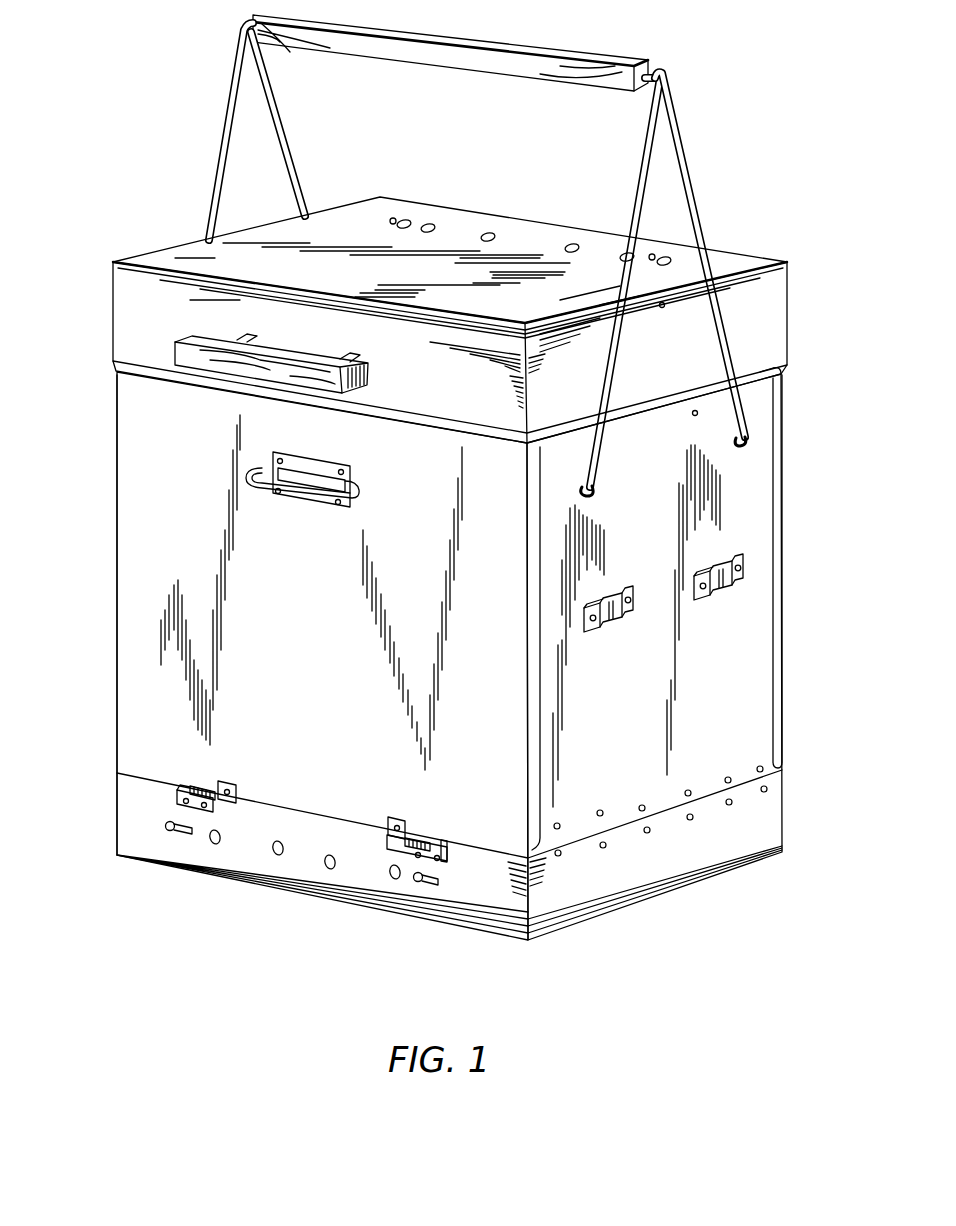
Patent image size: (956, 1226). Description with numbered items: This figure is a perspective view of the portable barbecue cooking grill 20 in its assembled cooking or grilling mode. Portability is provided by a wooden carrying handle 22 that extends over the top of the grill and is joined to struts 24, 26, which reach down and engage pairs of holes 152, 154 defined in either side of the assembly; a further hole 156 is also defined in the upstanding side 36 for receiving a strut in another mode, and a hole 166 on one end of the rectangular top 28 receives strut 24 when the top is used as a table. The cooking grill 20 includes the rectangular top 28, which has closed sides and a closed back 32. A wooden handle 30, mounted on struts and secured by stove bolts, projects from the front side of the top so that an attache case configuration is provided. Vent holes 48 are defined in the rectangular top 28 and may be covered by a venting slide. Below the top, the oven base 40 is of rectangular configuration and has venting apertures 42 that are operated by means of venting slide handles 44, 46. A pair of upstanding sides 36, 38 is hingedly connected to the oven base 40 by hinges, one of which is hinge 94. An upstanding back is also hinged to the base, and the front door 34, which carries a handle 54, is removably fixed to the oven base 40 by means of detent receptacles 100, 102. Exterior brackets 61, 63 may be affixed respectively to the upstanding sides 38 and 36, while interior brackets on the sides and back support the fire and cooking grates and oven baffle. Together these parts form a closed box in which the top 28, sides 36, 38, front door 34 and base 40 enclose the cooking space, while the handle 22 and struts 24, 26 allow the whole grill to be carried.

The portable barbecue cooking grill 20 is at (802, 282).
The wooden carrying handle 22 is at (613, 58).
The strut 24 is at (645, 153).
The strut 26 is at (688, 165).
The rectangular top 28 is at (760, 330).
The wooden handle 30 is at (176, 355).
The closed back 32 is at (436, 281).
The front door 34 is at (327, 605).
The upstanding side 36 is at (644, 668).
The upstanding side 38 is at (115, 692).
The oven base 40 is at (647, 878).
The venting apertures 42 is at (223, 846).
The venting slide handle 44 is at (190, 838).
The venting slide handle 46 is at (428, 888).
The vent holes 48 is at (485, 233).
The handle 54 is at (355, 488).
The exterior bracket 61 is at (610, 600).
The exterior bracket 63 is at (720, 563).
The hinge 94 is at (782, 770).
The detent receptacle 100 is at (221, 768).
The detent receptacle 102 is at (391, 804).
The hole 152 is at (585, 487).
The hole 154 is at (740, 447).
The hole 156 is at (693, 418).
The hole 166 is at (662, 309).